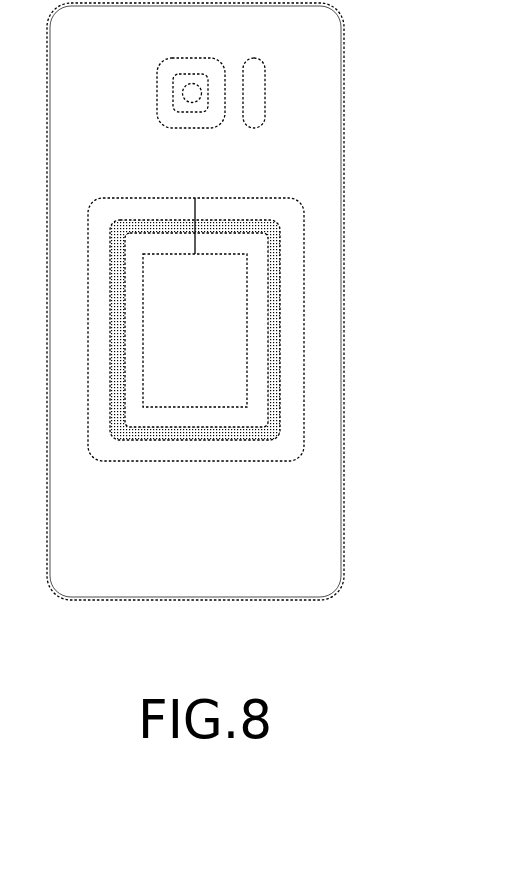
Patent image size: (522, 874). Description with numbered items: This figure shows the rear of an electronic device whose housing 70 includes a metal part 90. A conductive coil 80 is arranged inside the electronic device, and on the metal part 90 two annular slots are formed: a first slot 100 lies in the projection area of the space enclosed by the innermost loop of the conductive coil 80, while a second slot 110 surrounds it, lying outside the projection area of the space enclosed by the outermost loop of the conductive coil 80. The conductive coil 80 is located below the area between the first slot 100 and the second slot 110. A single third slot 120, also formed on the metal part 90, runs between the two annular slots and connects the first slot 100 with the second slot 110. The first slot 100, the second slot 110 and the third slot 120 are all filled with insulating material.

The housing 70 is at (343, 328).
The conductive coil 80 is at (187, 441).
The metal part 90 is at (303, 105).
The first slot 100 is at (147, 327).
The second slot 110 is at (245, 462).
The third slot 120 is at (195, 210).